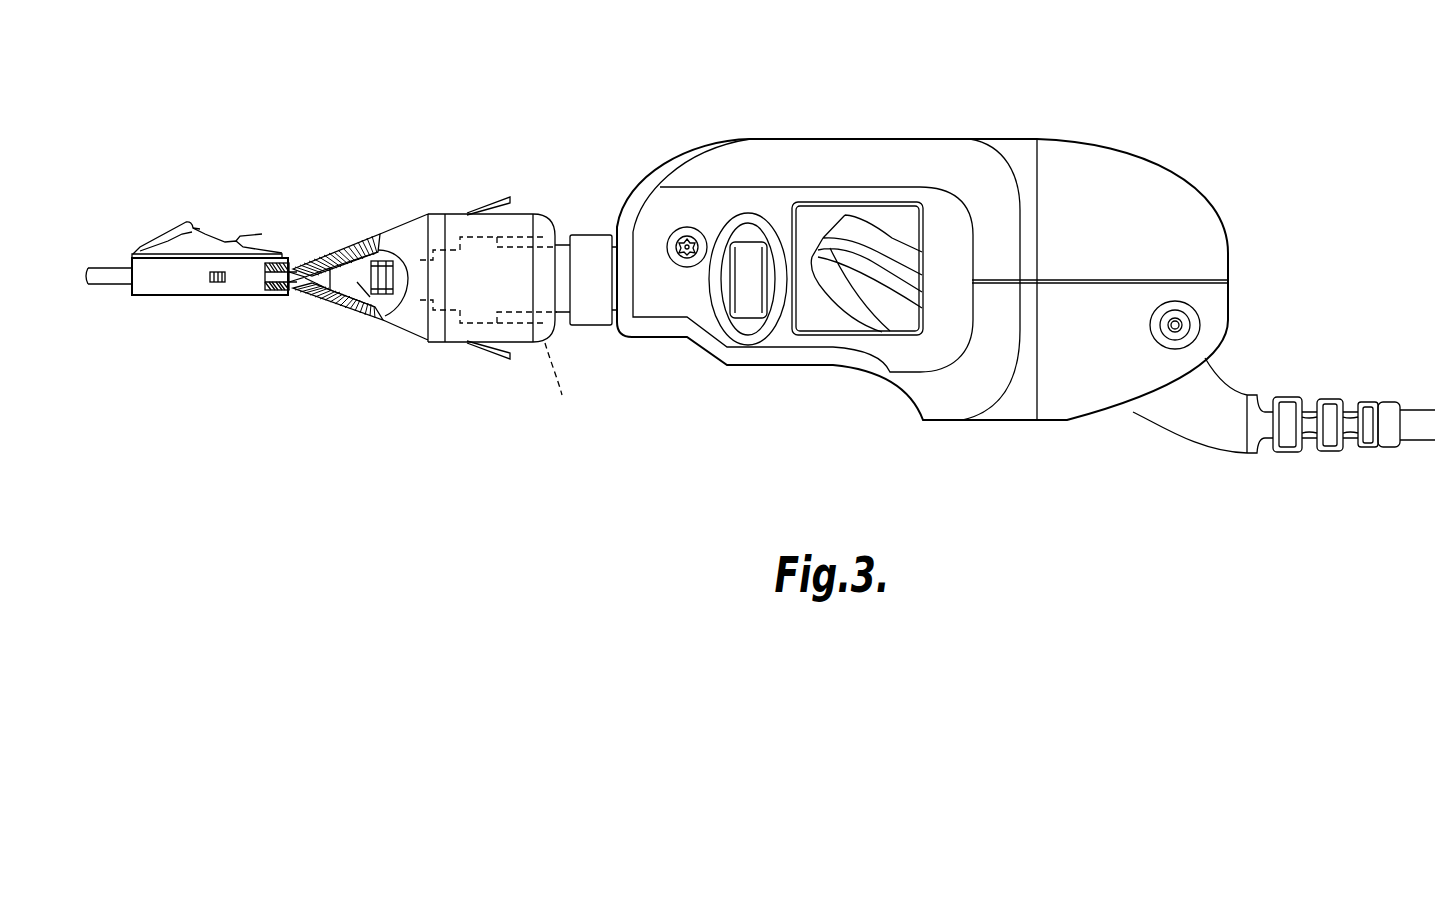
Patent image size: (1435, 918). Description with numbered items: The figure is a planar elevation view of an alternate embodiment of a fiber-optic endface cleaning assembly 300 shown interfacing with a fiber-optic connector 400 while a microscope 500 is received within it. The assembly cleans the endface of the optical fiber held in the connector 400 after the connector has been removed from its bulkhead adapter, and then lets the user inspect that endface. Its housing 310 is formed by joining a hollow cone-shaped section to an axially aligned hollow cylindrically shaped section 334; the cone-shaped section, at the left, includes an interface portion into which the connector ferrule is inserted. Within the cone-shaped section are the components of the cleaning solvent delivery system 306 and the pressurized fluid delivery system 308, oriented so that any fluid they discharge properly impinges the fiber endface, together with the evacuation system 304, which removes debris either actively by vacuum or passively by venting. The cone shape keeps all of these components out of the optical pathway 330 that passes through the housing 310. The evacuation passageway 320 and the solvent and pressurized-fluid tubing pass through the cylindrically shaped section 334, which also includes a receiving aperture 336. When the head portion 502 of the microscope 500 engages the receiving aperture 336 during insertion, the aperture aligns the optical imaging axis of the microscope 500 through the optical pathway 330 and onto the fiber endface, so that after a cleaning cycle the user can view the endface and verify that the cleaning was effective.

The fiber-optic endface cleaning assembly 300 is at (519, 213).
The evacuation system 304 is at (345, 312).
The cleaning solvent delivery system 306 is at (348, 247).
The pressurized fluid delivery system 308 is at (377, 243).
The housing 310 is at (433, 345).
The evacuation passageway 320 is at (492, 358).
The optical pathway 330 is at (370, 316).
The cylindrically shaped section 334 is at (523, 343).
The receiving aperture 336 is at (545, 235).
The fiber-optic connector 400 is at (192, 297).
The microscope 500 is at (801, 136).
The head portion 502 is at (465, 283).